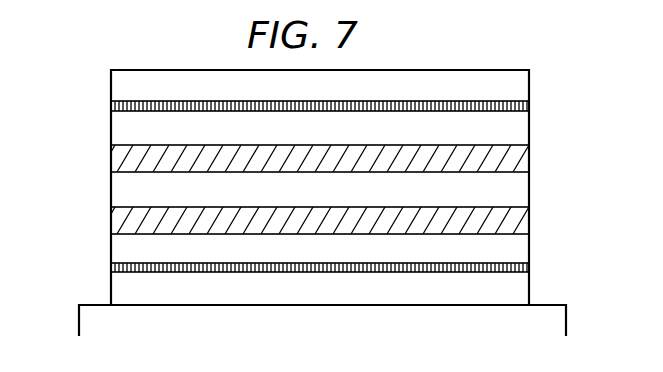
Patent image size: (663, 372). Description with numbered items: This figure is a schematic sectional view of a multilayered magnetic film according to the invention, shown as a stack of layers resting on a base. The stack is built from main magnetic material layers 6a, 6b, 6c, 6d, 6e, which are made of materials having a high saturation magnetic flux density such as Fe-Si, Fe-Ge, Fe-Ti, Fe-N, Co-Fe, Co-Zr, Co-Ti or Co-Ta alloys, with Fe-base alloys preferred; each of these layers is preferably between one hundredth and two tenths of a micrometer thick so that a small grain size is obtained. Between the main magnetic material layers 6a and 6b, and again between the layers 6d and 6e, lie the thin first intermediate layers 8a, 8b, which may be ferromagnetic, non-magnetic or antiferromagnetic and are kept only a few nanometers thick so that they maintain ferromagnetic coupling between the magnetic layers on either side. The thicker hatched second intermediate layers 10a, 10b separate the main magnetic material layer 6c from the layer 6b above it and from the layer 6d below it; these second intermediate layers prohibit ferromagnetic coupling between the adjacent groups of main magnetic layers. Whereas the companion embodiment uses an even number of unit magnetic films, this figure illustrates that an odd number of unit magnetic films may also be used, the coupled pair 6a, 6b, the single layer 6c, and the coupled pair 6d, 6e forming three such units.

The main magnetic material layer 6a is at (120, 83).
The main magnetic material layer 6b is at (120, 130).
The main magnetic material layer 6c is at (121, 190).
The main magnetic material layer 6d is at (121, 248).
The main magnetic material layer 6e is at (124, 289).
The first intermediate layer 8a is at (529, 106).
The first intermediate layer 8b is at (529, 270).
The second intermediate layer 10a is at (523, 164).
The second intermediate layer 10b is at (522, 222).